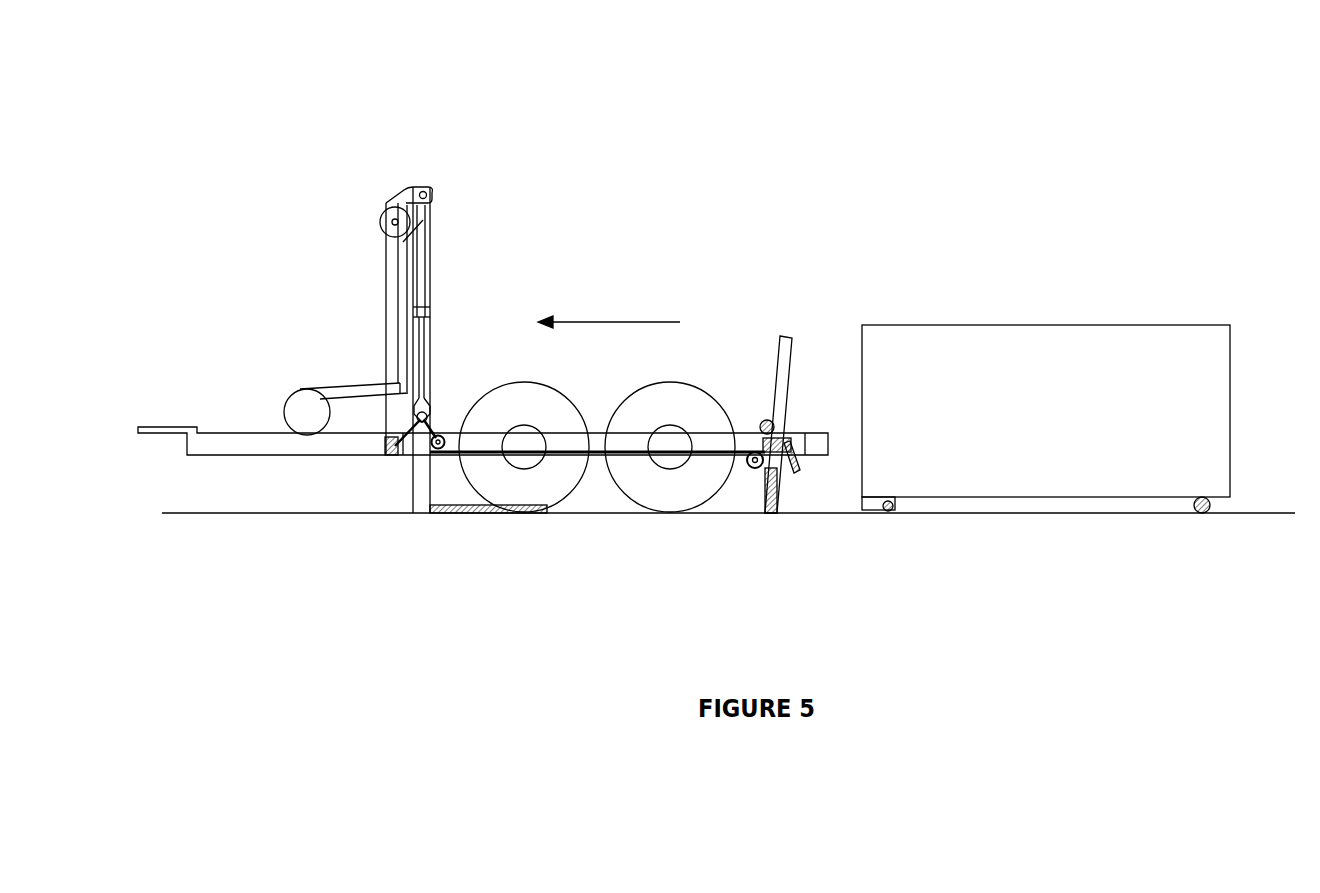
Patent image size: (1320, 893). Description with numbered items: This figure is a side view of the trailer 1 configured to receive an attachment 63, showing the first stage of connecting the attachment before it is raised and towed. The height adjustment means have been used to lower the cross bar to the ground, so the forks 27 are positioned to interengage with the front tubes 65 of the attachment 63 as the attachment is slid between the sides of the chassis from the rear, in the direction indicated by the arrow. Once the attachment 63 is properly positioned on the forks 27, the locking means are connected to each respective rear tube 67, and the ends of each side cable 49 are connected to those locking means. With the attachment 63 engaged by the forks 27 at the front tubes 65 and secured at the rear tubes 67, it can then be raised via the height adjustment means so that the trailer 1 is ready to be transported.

The trailer 1 is at (587, 212).
The forks 27 is at (480, 513).
The side cable 49 is at (615, 513).
The attachment 63 is at (1060, 372).
The front tubes 65 is at (893, 513).
The rear tubes 67 is at (1220, 513).